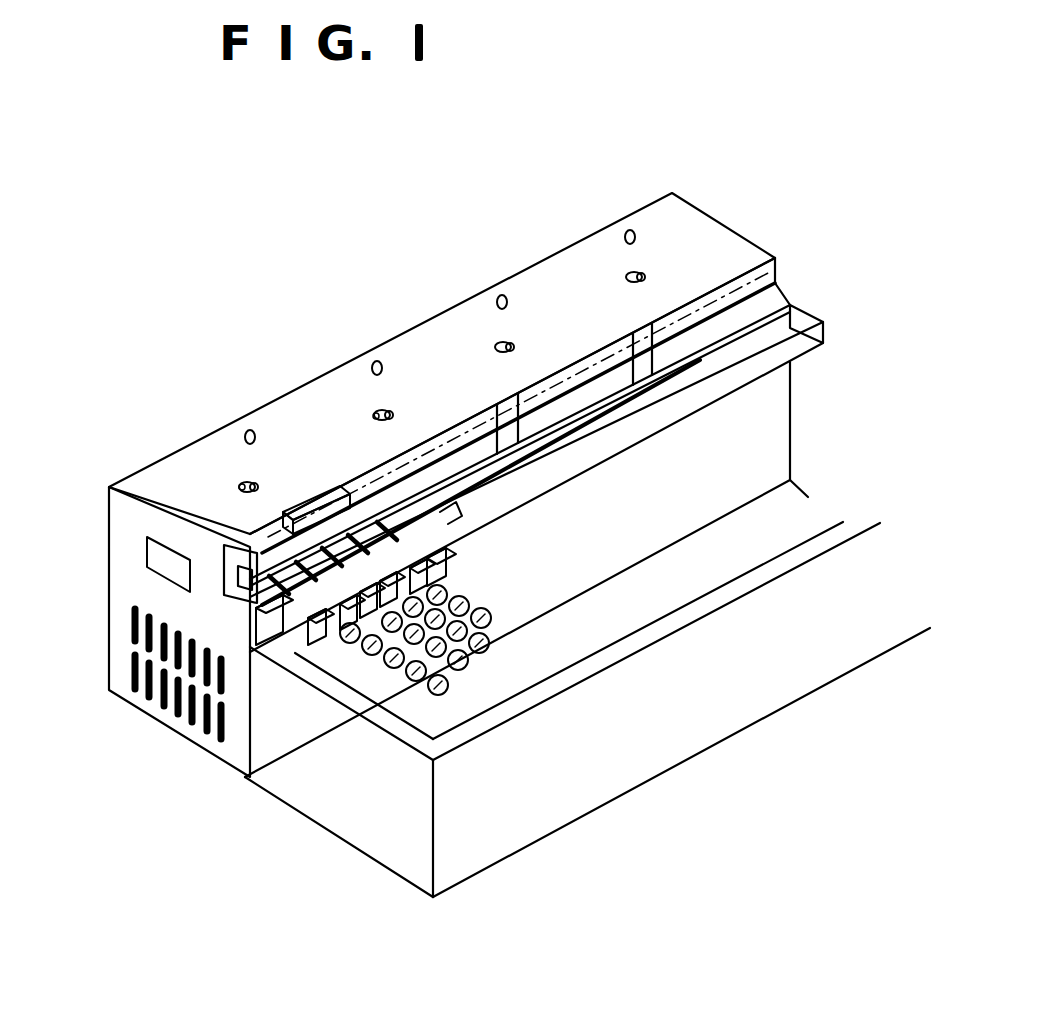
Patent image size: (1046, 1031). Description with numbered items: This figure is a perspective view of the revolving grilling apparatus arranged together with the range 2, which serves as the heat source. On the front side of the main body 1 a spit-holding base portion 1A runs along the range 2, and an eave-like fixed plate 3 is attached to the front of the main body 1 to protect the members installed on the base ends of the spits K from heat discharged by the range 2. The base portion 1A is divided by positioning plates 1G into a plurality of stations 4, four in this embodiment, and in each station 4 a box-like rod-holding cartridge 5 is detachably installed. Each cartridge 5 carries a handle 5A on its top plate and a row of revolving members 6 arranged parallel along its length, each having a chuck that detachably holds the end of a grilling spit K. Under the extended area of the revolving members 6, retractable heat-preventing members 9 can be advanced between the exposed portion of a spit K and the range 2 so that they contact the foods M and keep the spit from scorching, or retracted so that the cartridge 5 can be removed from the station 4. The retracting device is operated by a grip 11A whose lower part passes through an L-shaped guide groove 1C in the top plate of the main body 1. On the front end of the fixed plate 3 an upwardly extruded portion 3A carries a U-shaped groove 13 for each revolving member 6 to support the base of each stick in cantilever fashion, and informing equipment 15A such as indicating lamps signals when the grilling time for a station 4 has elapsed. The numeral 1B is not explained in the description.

The main body 1 is at (372, 328).
The spit-holding base portion 1A is at (233, 597).
The top plate 1B is at (548, 283).
The L-shaped guide groove 1C is at (380, 417).
The positioning plates 1G is at (227, 563).
The range 2 is at (560, 825).
The fixed plate 3 is at (263, 605).
The upwardly extruded portion 3A is at (295, 608).
The stations 4 is at (694, 296).
The rod-holding cartridge 5 is at (465, 412).
The handle 5A is at (317, 503).
The revolving members 6 is at (370, 545).
The heat-preventing members 9 is at (318, 612).
The grip 11A is at (385, 413).
The U-shaped groove 13 is at (455, 512).
The informing equipment 15A is at (627, 233).
The grilling spit K is at (450, 548).
The foods to be grilled M is at (466, 598).